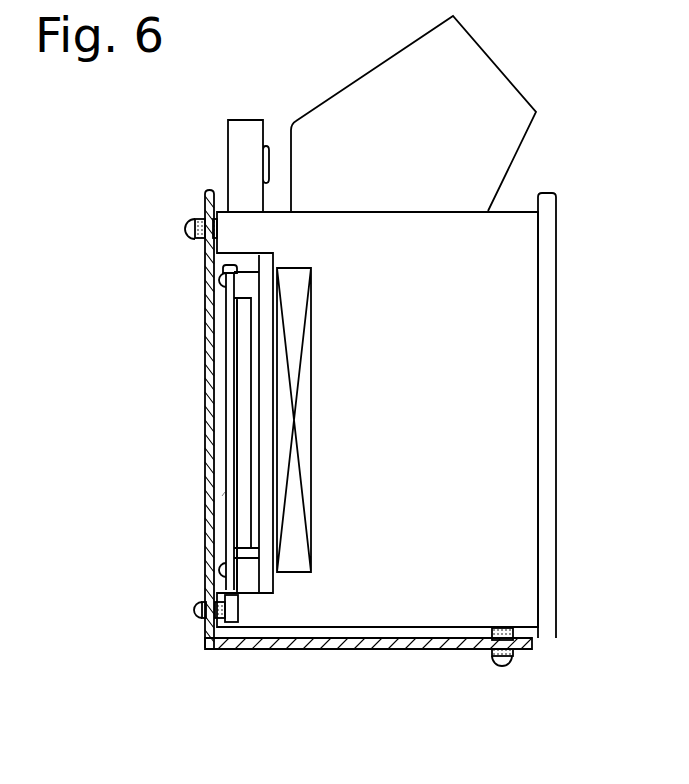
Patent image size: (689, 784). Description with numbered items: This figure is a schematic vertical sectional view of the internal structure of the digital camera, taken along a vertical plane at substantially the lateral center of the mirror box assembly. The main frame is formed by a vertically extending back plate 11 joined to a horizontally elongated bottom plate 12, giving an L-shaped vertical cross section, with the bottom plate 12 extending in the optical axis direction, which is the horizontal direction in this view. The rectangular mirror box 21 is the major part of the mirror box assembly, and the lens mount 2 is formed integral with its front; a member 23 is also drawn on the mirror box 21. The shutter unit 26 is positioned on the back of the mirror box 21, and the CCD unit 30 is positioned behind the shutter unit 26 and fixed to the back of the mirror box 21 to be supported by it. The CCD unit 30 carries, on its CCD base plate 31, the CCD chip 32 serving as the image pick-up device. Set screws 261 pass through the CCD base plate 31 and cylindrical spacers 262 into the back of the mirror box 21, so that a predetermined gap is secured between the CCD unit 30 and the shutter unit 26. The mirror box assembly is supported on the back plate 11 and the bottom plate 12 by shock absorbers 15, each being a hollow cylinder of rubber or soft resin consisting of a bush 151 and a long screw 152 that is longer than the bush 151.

The lens mount 2 is at (548, 463).
The back plate 11 is at (207, 418).
The bottom plate 12 is at (343, 650).
The shock absorber 15 is at (333, 461).
The bush 151 is at (195, 237).
The long screw 152 is at (193, 610).
The mirror box 21 is at (510, 367).
The guide member 23 is at (492, 85).
The shutter unit 26 is at (300, 421).
The CCD unit 30 is at (225, 492).
The CCD base plate 31 is at (232, 527).
The CCD chip 32 is at (243, 448).
The set screw 261 is at (253, 279).
The cylindrical spacer 262 is at (250, 298).